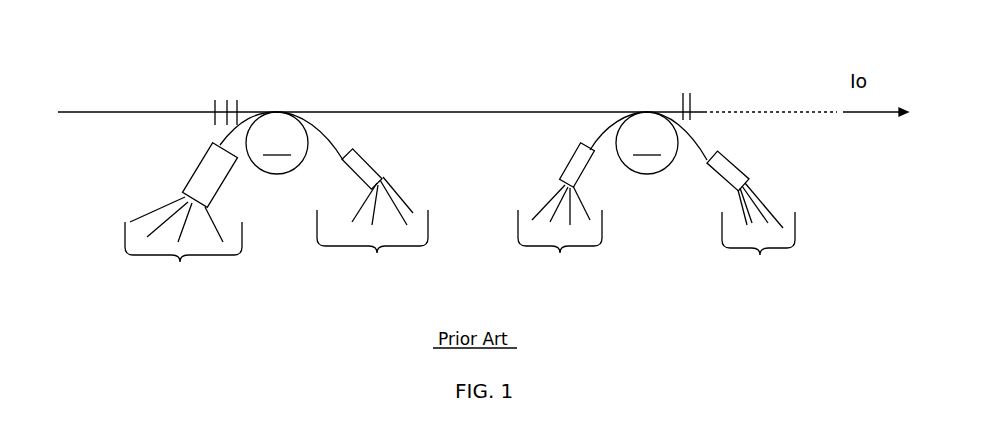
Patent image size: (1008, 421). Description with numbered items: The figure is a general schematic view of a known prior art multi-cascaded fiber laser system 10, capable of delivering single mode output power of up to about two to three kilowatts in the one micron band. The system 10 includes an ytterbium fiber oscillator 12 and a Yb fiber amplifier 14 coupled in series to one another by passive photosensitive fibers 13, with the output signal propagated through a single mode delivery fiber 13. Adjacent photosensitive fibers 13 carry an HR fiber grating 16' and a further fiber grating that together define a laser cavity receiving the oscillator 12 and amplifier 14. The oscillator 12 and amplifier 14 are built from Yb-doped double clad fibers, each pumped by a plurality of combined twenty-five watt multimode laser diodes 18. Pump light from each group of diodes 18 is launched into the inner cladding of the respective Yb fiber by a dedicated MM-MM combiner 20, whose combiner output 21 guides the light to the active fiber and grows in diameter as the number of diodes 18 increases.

The multi-cascaded fiber laser system 10 is at (498, 48).
The ytterbium fiber oscillator 12 is at (273, 123).
The passive photosensitive fiber 13 is at (483, 137).
The Yb fiber amplifier 14 is at (640, 117).
The HR fiber grating 16' is at (211, 99).
The MM laser diodes 18 is at (461, 233).
The MM-MM combiner 20 is at (450, 163).
The combiner output 21 is at (463, 154).